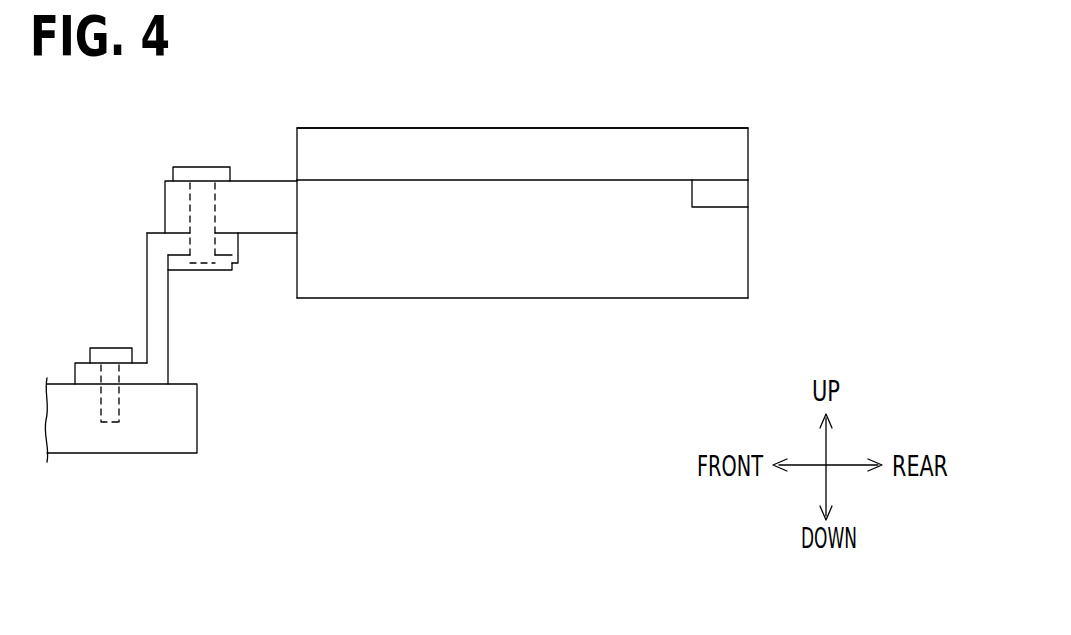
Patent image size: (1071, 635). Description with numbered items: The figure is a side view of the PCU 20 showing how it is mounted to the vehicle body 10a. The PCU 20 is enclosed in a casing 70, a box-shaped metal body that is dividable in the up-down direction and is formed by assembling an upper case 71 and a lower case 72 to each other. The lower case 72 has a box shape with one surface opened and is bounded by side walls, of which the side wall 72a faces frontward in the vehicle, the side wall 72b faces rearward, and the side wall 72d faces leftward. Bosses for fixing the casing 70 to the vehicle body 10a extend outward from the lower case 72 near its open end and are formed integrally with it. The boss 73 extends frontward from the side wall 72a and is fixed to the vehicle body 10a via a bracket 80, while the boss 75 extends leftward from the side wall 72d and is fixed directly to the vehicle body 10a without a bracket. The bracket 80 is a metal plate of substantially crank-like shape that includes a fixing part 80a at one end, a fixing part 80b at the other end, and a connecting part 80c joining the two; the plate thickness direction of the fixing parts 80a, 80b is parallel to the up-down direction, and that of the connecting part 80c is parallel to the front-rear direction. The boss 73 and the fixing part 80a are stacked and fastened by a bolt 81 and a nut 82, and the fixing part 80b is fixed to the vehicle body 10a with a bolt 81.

The vehicle body 10a is at (67, 418).
The PCU 20 is at (828, 122).
The casing 70 is at (549, 210).
The upper case 71 is at (748, 128).
The lower case 72 is at (549, 273).
The side wall 72a is at (296, 282).
The side wall 72b is at (748, 245).
The side wall 72d is at (633, 255).
The boss 73 is at (165, 195).
The boss 75 is at (725, 194).
The bracket 80 is at (166, 267).
The fixing part 80a is at (228, 243).
The fixing part 80b is at (86, 372).
The connecting part 80c is at (158, 283).
The bolt 81 is at (200, 169).
The nut 82 is at (236, 266).